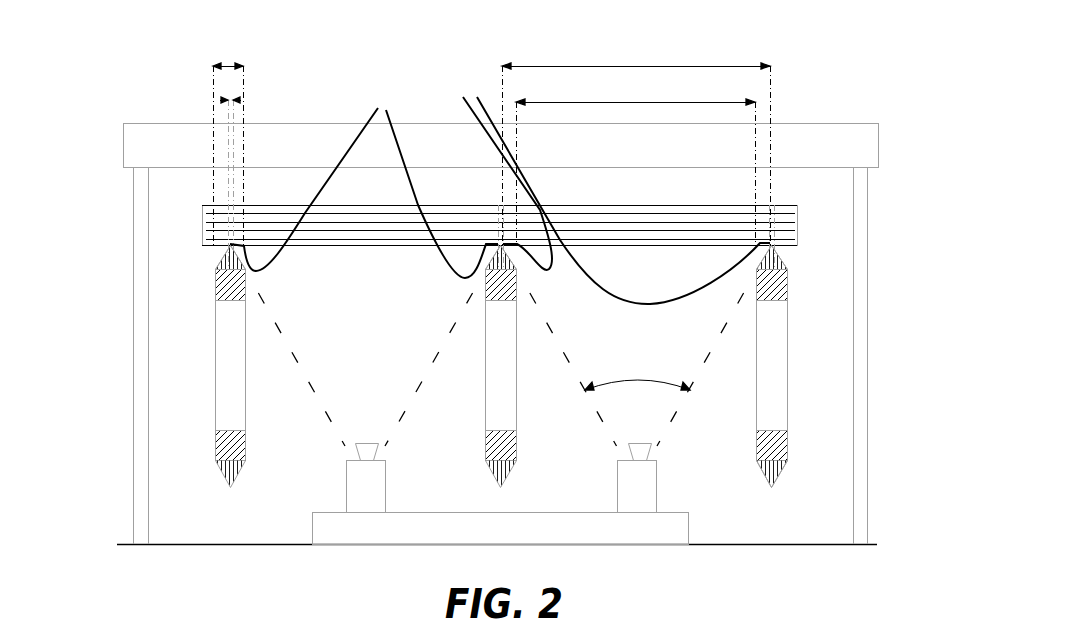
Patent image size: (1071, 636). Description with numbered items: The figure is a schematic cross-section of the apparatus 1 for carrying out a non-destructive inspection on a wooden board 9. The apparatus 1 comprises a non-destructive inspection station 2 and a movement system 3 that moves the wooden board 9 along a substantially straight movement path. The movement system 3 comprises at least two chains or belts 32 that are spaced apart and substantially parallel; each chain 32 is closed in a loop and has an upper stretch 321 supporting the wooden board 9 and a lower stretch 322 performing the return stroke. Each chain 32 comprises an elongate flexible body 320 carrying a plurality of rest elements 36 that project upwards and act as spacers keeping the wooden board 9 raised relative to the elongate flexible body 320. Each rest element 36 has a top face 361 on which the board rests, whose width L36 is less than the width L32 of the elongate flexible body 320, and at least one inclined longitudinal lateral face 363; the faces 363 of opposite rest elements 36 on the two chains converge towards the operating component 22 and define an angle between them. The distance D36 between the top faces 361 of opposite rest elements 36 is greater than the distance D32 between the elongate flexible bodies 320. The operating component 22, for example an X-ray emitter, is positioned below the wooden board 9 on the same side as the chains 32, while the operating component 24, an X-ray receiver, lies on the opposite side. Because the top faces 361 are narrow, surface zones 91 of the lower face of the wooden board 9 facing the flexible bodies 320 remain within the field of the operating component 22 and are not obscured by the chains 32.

The apparatus 1 is at (170, 104).
The non-destructive inspection station 2 is at (875, 492).
The movement system 3 is at (830, 358).
The wooden board 9 is at (787, 221).
The operating component 22 is at (628, 472).
The operating component (X-ray receiver) 24 is at (797, 130).
The chain or belt 32 is at (507, 367).
The rest element 36 is at (588, 344).
The surface zone 91 is at (500, 188).
The elongate flexible body 320 is at (777, 284).
The upper stretch 321 is at (216, 284).
The lower stretch 322 is at (216, 450).
The top face 361 is at (777, 243).
The longitudinal lateral face 363 is at (777, 476).
The width of the elongate flexible body L32 is at (229, 142).
The width of the top face L36 is at (232, 100).
The distance between the elongate flexible bodies D32 is at (636, 159).
The distance between the top faces D36 is at (636, 141).